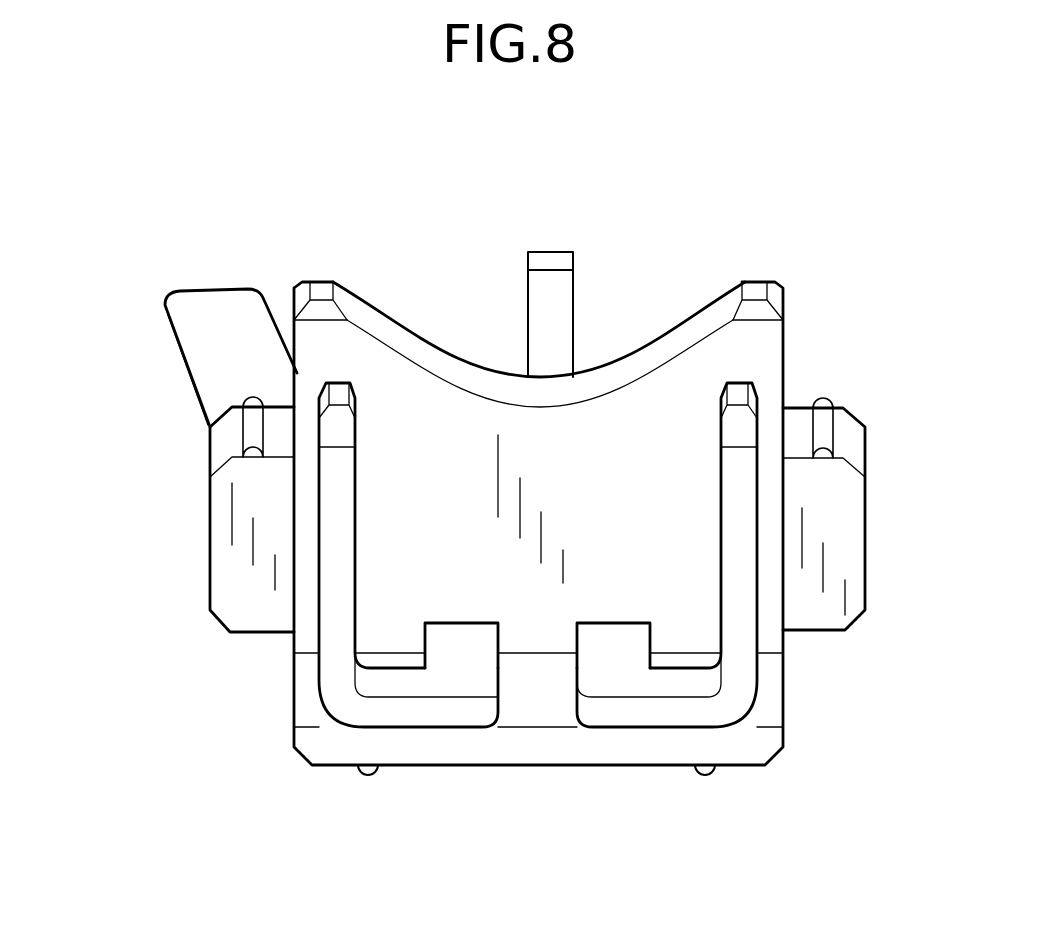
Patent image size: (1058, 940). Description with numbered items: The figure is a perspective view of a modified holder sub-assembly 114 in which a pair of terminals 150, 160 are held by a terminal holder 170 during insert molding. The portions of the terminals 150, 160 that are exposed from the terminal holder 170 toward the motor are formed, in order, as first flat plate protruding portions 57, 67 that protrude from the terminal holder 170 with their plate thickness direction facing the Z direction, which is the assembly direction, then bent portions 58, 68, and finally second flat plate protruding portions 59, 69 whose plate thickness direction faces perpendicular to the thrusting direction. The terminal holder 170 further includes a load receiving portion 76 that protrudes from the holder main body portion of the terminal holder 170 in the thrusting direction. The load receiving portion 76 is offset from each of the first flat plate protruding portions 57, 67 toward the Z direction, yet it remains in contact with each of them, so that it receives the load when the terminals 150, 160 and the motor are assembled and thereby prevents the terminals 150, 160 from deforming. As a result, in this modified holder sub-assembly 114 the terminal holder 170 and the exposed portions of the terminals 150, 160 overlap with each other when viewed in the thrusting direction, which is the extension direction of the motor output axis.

The holder sub-assembly 114 is at (336, 180).
The terminal holder 170 is at (795, 352).
The terminal 150 is at (447, 287).
The terminal 160 is at (155, 350).
The second flat plate protruding portion 69 is at (333, 573).
The second flat plate protruding portion 59 is at (745, 548).
The bent portion 68 is at (340, 693).
The bent portion 58 is at (740, 693).
The first flat plate protruding portion 67 is at (458, 653).
The first flat plate protruding portion 57 is at (623, 653).
The load receiving portion 76 is at (745, 757).